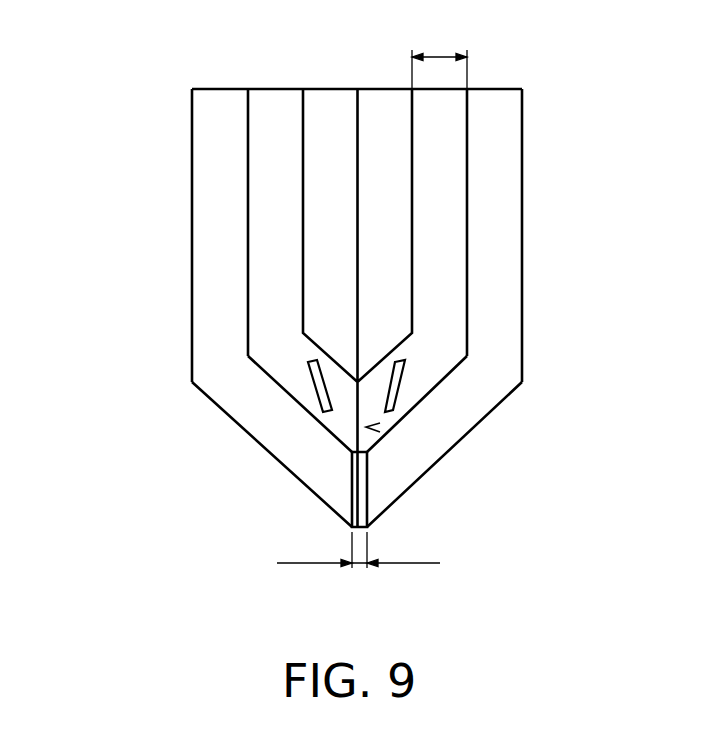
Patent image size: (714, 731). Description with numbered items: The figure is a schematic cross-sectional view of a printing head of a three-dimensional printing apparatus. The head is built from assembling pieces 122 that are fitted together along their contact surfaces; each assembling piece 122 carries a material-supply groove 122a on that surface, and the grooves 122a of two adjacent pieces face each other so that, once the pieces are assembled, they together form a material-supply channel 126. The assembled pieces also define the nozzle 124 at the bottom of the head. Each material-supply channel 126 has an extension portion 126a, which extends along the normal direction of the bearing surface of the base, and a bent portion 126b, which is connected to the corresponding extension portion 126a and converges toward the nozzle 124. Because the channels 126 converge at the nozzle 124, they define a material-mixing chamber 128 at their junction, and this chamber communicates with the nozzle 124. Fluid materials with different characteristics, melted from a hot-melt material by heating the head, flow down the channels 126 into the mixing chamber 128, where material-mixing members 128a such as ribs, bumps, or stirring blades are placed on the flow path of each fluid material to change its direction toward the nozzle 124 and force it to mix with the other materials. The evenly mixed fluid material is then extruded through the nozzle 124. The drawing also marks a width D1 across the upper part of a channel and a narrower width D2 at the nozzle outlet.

The assembling piece 122 is at (330, 88).
The material-supply groove 122a is at (278, 112).
The nozzle 124 is at (352, 474).
The material-supply channel 126 is at (359, 308).
The extension portion 126a is at (265, 295).
The bent portion 126b is at (250, 357).
The material-mixing chamber 128 is at (366, 427).
The material-mixing member 128a is at (310, 378).
The channel width D1 is at (439, 50).
The outlet width D2 is at (358, 571).